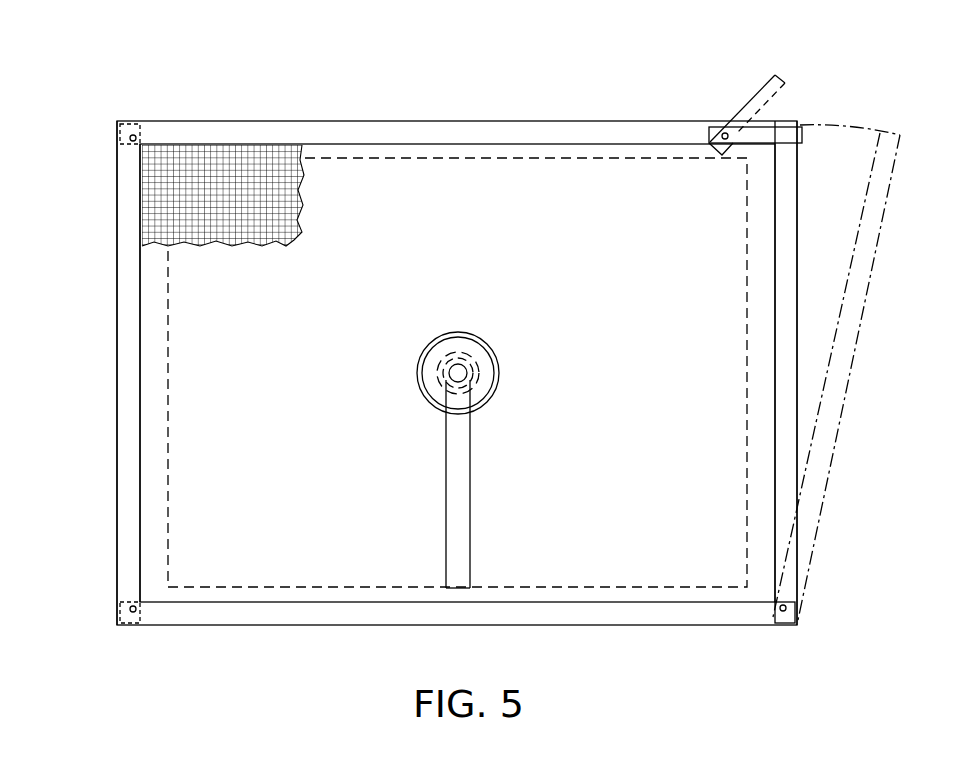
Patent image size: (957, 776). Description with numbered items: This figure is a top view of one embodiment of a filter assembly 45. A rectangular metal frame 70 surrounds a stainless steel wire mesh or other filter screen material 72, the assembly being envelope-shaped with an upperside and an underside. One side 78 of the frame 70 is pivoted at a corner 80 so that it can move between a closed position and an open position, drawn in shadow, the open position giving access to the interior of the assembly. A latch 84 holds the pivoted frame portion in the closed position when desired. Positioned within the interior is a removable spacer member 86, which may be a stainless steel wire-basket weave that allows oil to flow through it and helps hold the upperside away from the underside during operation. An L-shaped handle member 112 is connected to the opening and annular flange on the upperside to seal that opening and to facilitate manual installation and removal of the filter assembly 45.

The filter assembly 45 is at (423, 316).
The rectangular metal frame 70 is at (117, 303).
The filter screen material 72 is at (228, 157).
The side of frame 78 is at (793, 195).
The corner 80 is at (787, 608).
The latch 84 is at (755, 92).
The removable spacer member 86 is at (168, 472).
The L-shaped handle member 112 is at (470, 522).